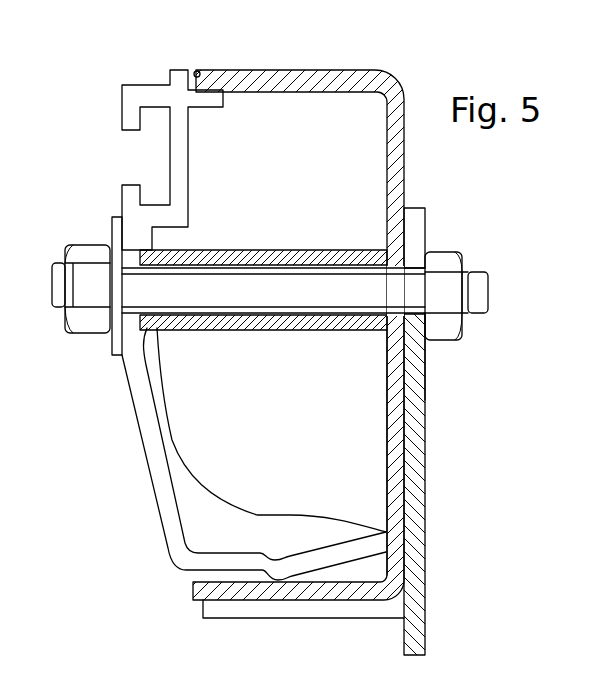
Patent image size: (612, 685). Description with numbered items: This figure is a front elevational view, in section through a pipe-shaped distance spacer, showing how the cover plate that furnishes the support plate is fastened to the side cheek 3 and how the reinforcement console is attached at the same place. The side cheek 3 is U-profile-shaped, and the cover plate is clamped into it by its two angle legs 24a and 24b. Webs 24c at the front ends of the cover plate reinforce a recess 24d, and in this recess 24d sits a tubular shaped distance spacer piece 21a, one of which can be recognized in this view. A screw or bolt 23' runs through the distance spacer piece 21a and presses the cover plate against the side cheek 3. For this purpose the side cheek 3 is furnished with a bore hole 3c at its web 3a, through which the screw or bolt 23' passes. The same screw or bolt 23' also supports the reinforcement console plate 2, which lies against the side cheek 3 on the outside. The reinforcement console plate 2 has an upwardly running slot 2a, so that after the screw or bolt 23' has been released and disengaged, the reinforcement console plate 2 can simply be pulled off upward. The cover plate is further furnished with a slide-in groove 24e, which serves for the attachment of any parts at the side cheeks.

The reinforcement console plate 2 is at (413, 487).
The slot 2a is at (417, 228).
The side cheek 3 is at (262, 588).
The web 3a is at (400, 400).
The bore hole 3c is at (423, 343).
The distance spacer piece 21a is at (140, 250).
The screw or bolt 23' is at (304, 294).
The angle leg 24a is at (210, 100).
The angle leg 24b is at (203, 562).
The web 24c is at (165, 428).
The recess 24d is at (138, 322).
The slide-in groove 24e is at (162, 155).